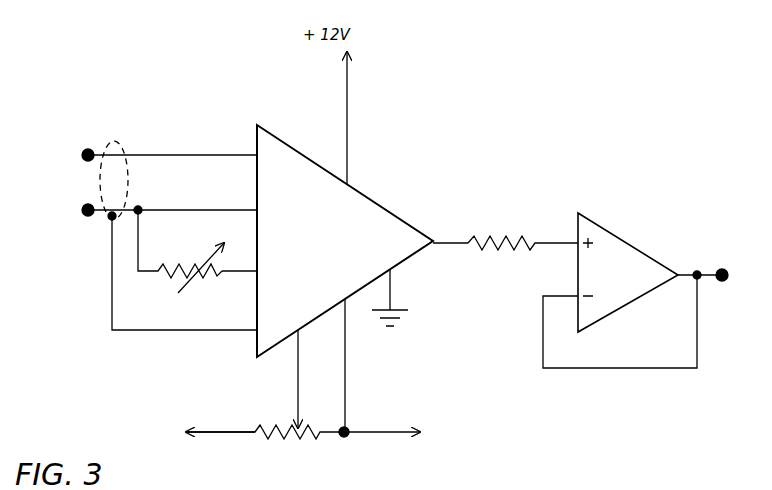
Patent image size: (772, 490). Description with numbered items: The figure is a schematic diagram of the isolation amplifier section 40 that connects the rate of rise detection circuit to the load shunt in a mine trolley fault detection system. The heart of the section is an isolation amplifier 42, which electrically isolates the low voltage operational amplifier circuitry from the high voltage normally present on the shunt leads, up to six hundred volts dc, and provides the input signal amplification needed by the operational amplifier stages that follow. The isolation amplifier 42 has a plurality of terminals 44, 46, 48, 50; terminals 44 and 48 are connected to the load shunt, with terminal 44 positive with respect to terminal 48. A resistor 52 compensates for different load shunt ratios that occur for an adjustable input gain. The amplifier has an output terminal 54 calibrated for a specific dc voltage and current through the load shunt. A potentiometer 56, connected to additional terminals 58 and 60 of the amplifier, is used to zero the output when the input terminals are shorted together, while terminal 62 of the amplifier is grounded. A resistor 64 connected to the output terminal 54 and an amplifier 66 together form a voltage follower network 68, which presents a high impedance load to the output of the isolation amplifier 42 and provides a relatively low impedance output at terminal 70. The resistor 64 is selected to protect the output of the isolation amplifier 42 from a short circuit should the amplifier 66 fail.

The isolation amplifier section 40 is at (408, 158).
The isolation amplifier 42 is at (257, 150).
The terminal 44 is at (257, 162).
The terminal 46 is at (257, 208).
The terminal 48 is at (257, 272).
The terminal 50 is at (256, 333).
The resistor 52 is at (163, 268).
The output terminal 54 is at (434, 240).
The potentiometer 56 is at (313, 438).
The terminal 58 is at (300, 336).
The terminal 60 is at (347, 306).
The terminal 62 is at (392, 274).
The resistor 64 is at (506, 240).
The amplifier 66 is at (608, 232).
The voltage follower network 68 is at (628, 270).
The terminal 70 is at (726, 268).